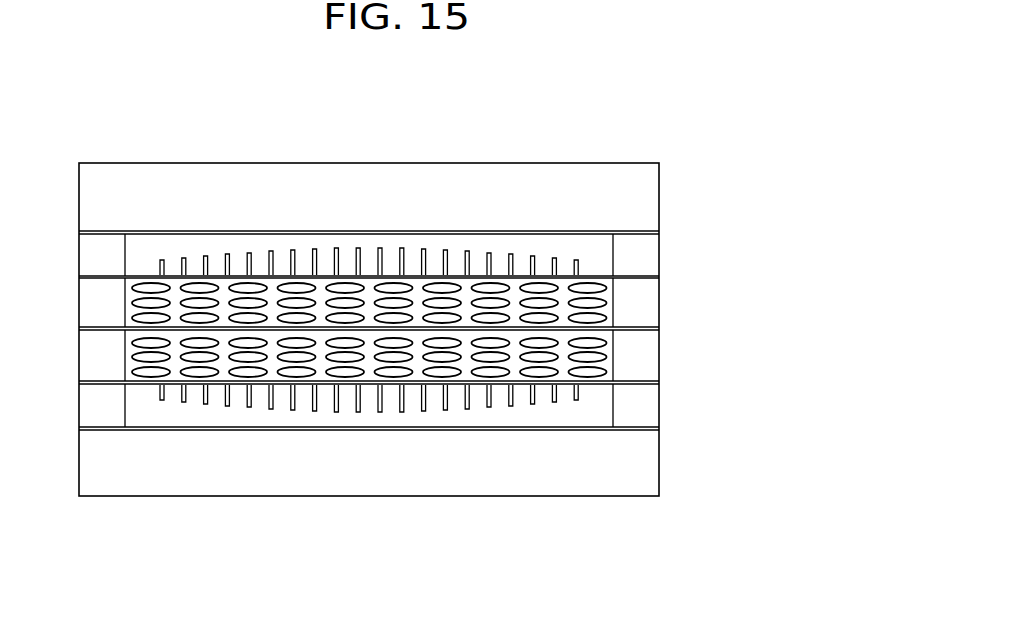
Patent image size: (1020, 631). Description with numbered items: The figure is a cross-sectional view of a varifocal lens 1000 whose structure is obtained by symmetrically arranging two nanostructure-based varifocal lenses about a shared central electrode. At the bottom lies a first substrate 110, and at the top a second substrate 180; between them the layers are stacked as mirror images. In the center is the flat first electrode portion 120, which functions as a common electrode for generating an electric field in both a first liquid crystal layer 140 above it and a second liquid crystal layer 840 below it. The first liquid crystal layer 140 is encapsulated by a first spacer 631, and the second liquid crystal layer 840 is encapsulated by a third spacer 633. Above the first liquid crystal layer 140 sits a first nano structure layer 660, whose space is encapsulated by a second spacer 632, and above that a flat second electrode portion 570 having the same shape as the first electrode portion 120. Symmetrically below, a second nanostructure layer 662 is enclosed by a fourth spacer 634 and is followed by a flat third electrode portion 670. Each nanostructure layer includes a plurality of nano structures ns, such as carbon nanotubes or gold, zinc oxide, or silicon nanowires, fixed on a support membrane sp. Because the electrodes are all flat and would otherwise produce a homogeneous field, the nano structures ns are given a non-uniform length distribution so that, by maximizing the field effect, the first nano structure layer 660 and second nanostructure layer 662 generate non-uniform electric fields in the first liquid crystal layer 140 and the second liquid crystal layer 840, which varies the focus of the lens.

The varifocal lens 1000 is at (682, 146).
The second substrate 180 is at (659, 197).
The second electrode portion 570 is at (659, 232).
The second spacer 632 is at (659, 255).
The first nano structure layer 660 is at (530, 118).
The first spacer 631 is at (659, 303).
The first liquid crystal layer 140 is at (565, 282).
The first electrode portion 120 is at (659, 330).
The third spacer 633 is at (659, 357).
The second liquid crystal layer 840 is at (565, 374).
The fourth spacer 634 is at (659, 405).
The second nanostructure layer 662 is at (532, 540).
The third electrode portion 670 is at (659, 428).
The first substrate 110 is at (659, 463).
The nano structures ns is at (470, 275).
The support membrane sp is at (523, 278).